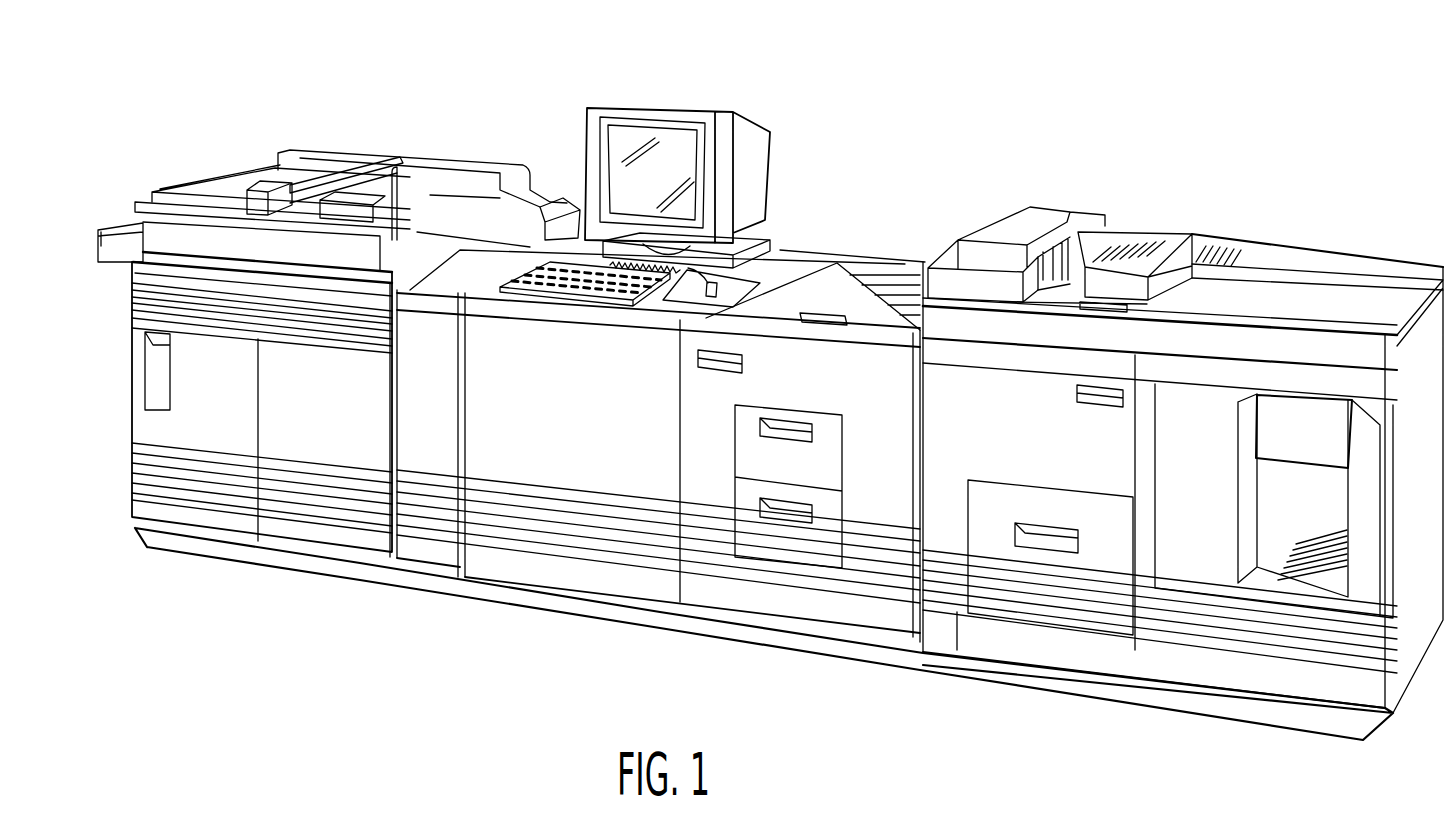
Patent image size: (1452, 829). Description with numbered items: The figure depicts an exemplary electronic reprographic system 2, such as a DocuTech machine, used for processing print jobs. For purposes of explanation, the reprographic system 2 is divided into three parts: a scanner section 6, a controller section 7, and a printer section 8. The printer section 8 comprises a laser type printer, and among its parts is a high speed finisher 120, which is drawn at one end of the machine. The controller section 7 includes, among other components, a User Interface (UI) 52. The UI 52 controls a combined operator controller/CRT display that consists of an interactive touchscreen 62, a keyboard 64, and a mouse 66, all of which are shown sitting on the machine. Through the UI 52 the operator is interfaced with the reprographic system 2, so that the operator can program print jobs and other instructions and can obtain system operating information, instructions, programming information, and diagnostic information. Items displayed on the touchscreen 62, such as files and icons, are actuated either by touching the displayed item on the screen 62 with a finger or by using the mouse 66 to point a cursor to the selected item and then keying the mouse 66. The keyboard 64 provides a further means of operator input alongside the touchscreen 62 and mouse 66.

The electronic reprographic system 2 is at (911, 99).
The scanner section 6 is at (392, 145).
The controller section 7 is at (114, 419).
The printer section 8 is at (1377, 771).
The User Interface (UI) 52 is at (697, 98).
The interactive touchscreen 62 is at (620, 181).
The keyboard 64 is at (583, 293).
The mouse 66 is at (674, 310).
The high speed finisher 120 is at (1293, 245).